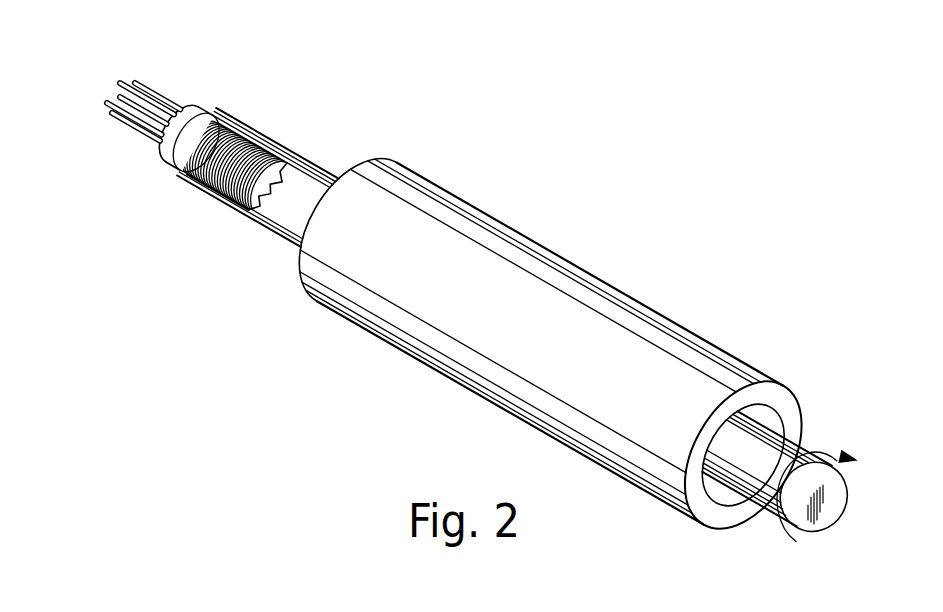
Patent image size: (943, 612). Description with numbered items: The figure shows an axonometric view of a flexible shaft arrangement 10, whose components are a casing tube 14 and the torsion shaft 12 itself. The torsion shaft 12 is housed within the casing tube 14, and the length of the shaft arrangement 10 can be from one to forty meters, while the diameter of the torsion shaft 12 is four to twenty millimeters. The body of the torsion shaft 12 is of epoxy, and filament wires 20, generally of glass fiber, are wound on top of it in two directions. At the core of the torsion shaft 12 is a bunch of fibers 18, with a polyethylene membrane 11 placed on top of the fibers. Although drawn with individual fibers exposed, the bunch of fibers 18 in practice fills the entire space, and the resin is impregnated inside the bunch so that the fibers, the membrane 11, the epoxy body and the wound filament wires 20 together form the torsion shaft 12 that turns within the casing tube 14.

The flexible shaft arrangement 10 is at (392, 395).
The polyethylene membrane 11 is at (180, 143).
The torsion shaft 12 is at (550, 344).
The casing tube 14 is at (525, 332).
The bunch of fibers 18 is at (130, 83).
The filament wires 20 is at (153, 260).